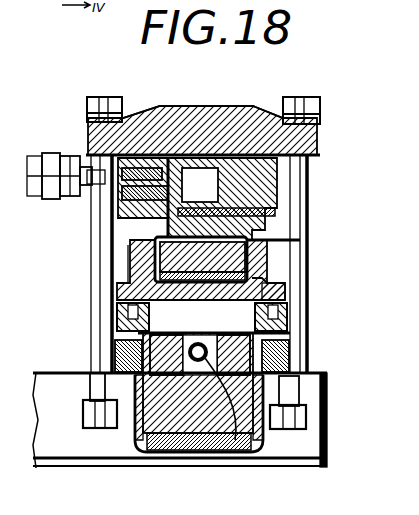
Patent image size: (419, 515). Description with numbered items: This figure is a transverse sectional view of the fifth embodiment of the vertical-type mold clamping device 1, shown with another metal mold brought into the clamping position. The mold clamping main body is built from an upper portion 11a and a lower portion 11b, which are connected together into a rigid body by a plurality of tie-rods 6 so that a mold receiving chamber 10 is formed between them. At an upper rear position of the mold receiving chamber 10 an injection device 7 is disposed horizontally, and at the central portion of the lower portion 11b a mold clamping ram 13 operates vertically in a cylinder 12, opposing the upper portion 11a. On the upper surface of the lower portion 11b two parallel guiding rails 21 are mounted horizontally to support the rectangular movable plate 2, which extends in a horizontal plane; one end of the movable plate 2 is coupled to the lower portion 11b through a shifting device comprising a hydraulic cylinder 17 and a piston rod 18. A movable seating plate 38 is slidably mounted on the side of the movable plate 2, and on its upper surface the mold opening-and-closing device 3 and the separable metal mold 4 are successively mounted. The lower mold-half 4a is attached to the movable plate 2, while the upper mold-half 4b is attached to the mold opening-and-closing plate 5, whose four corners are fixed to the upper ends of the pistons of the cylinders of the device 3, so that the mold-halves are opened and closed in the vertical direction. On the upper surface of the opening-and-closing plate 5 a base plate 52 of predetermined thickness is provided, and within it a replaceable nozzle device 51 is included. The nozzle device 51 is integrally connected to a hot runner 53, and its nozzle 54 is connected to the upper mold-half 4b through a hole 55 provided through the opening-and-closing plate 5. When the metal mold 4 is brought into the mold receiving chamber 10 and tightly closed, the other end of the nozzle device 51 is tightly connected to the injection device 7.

The mold clamping device 1 is at (160, 108).
The upper portion of the mold clamping main body 11a is at (214, 108).
The lower portion of the mold clamping main body 11b is at (90, 387).
The movable plate 2 is at (115, 316).
The mold opening-and-closing device 3 is at (270, 207).
The separable mold 4 is at (124, 278).
The lower mold-half 4a is at (262, 262).
The upper mold-half 4b is at (255, 233).
The mold opening-and-closing plate 5 is at (275, 216).
The tie-rod 6 is at (100, 232).
The injection device 7 is at (68, 165).
The mold receiving chamber 10 is at (128, 258).
The cylinder 12 is at (176, 470).
The mold clamping ram 13 is at (205, 452).
The hydraulic cylinder 17 is at (262, 432).
The piston rod 18 is at (302, 330).
The guiding rail 21 is at (113, 352).
The movable seating plate 38 is at (300, 292).
The nozzle device 51 is at (185, 110).
The base plate 52 is at (262, 118).
The hot runner 53 is at (138, 128).
The nozzle 54 is at (112, 206).
The hole 55 is at (200, 185).